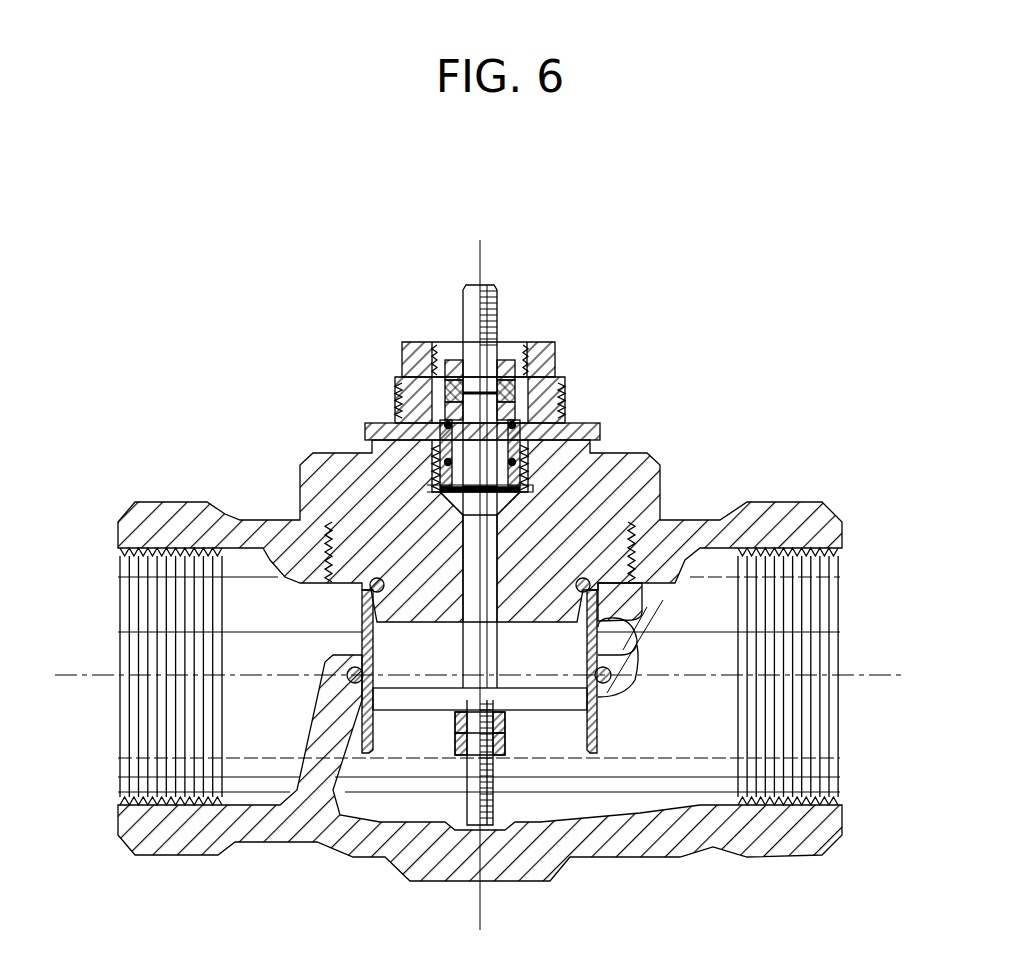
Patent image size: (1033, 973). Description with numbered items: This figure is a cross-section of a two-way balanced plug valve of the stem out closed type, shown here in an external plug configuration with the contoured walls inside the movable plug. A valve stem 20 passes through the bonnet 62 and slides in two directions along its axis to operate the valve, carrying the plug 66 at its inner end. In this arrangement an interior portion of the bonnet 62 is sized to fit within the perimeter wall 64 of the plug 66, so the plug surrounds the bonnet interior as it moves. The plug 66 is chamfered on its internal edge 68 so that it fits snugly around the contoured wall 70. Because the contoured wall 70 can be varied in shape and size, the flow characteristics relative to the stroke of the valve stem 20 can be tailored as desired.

The valve stem 20 is at (490, 285).
The bonnet 62 is at (603, 470).
The perimeter wall 64 is at (362, 641).
The plug 66 is at (405, 702).
The internal edge 68 is at (630, 653).
The contoured wall 70 is at (598, 603).